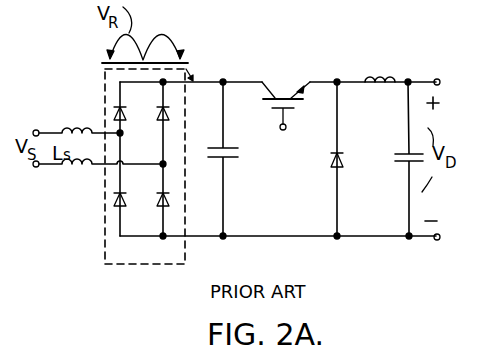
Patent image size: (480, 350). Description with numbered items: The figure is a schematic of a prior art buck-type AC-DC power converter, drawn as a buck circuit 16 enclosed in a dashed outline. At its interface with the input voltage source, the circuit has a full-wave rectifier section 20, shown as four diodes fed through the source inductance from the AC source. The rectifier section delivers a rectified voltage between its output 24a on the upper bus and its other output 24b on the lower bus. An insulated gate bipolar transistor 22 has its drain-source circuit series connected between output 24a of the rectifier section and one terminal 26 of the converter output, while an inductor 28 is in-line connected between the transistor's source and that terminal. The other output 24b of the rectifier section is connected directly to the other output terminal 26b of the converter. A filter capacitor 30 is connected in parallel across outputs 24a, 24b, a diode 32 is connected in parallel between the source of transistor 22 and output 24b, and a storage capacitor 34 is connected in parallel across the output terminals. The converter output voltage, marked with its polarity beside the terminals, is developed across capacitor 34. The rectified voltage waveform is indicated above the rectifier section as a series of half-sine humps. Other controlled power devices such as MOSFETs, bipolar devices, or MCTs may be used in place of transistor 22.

The buck circuit 16 is at (125, 273).
The full-wave rectifier section 20 is at (98, 256).
The insulated gate bipolar transistor 22 is at (310, 60).
The output of the rectifier section 24a is at (256, 60).
The other output of the rectifier section 24b is at (219, 242).
The terminal of the converter output 26 is at (439, 79).
The other output terminal of the converter 26b is at (436, 241).
The inductor 28 is at (384, 92).
The filter capacitor 30 is at (227, 147).
The diode 32 is at (333, 168).
The storage capacitor 34 is at (401, 153).